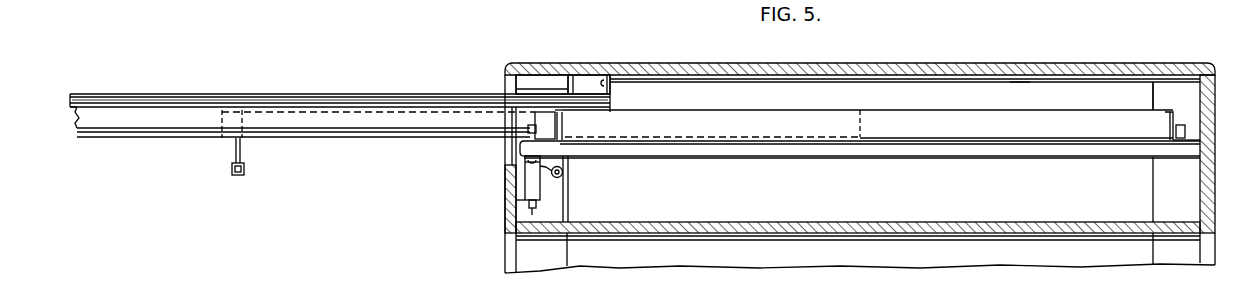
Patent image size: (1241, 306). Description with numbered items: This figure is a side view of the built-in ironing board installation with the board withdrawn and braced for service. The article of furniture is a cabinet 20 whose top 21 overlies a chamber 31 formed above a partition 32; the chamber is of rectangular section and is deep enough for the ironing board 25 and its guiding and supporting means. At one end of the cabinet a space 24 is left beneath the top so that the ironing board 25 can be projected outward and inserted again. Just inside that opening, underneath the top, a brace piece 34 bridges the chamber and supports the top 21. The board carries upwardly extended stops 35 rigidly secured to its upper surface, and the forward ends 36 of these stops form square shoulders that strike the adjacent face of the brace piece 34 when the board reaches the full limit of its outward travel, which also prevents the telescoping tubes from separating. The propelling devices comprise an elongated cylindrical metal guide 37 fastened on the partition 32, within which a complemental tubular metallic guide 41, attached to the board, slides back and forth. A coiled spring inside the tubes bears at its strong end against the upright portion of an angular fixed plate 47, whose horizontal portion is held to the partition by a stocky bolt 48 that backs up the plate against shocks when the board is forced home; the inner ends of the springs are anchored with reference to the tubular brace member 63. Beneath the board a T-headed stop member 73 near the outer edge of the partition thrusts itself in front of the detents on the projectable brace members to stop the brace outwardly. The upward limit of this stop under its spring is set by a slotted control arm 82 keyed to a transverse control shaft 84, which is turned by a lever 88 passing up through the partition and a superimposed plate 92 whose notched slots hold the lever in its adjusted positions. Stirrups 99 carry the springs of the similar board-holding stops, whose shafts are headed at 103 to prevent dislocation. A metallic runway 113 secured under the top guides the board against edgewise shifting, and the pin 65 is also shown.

The top 21 is at (871, 67).
The space 24 is at (512, 152).
The ironing board 25 is at (333, 100).
The chamber 31 is at (1171, 96).
The partition 32 is at (1042, 152).
The brace piece 34 is at (541, 80).
The stops 35 is at (601, 81).
The forward ends 36 is at (577, 82).
The cylindrical metal guide 37 is at (906, 123).
The tubular metallic guide 41 is at (416, 133).
The angular fixed plate 47 is at (1173, 118).
The bolt 48 is at (1182, 142).
The tubular supporting or brace member 63 is at (357, 114).
The pin 65 is at (242, 157).
The T-headed stop member 73 is at (527, 129).
The control arm 82 is at (544, 174).
The control shaft 84 is at (564, 173).
The lever 88 is at (563, 122).
The superimposed plate 92 is at (572, 138).
The stirrups 99 is at (525, 190).
The head 103 is at (533, 212).
The metallic runway 113 is at (1018, 83).
The cabinet 20 is at (510, 206).